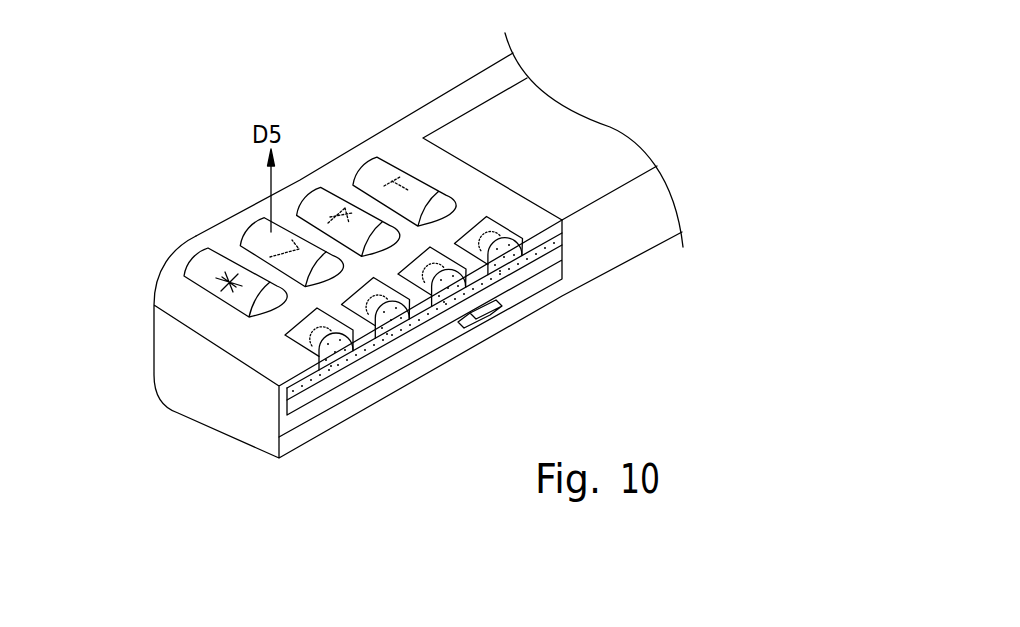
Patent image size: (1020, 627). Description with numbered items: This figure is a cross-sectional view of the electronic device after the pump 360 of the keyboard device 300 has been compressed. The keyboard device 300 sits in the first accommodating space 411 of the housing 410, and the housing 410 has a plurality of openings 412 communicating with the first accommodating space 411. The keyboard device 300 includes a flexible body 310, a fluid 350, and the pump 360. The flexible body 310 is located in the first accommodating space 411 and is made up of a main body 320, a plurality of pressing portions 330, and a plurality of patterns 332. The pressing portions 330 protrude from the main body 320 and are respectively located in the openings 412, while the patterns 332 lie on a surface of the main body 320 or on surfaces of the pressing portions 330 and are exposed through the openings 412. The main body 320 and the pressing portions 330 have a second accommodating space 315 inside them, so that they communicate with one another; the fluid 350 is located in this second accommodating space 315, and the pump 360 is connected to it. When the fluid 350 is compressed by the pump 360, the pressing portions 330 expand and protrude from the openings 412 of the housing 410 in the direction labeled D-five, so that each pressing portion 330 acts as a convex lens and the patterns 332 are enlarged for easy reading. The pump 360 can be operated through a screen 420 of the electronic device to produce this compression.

The keyboard device 300 is at (302, 354).
The flexible body 310 is at (302, 325).
The second accommodating space 315 is at (350, 360).
The main body 320 is at (304, 378).
The pressing portion 330 is at (225, 292).
The pattern 332 is at (343, 210).
The fluid 350 is at (338, 356).
The pump 360 is at (487, 312).
The housing 410 is at (192, 261).
The first accommodating space 411 is at (539, 287).
The opening 412 is at (239, 227).
The screen 420 is at (565, 127).